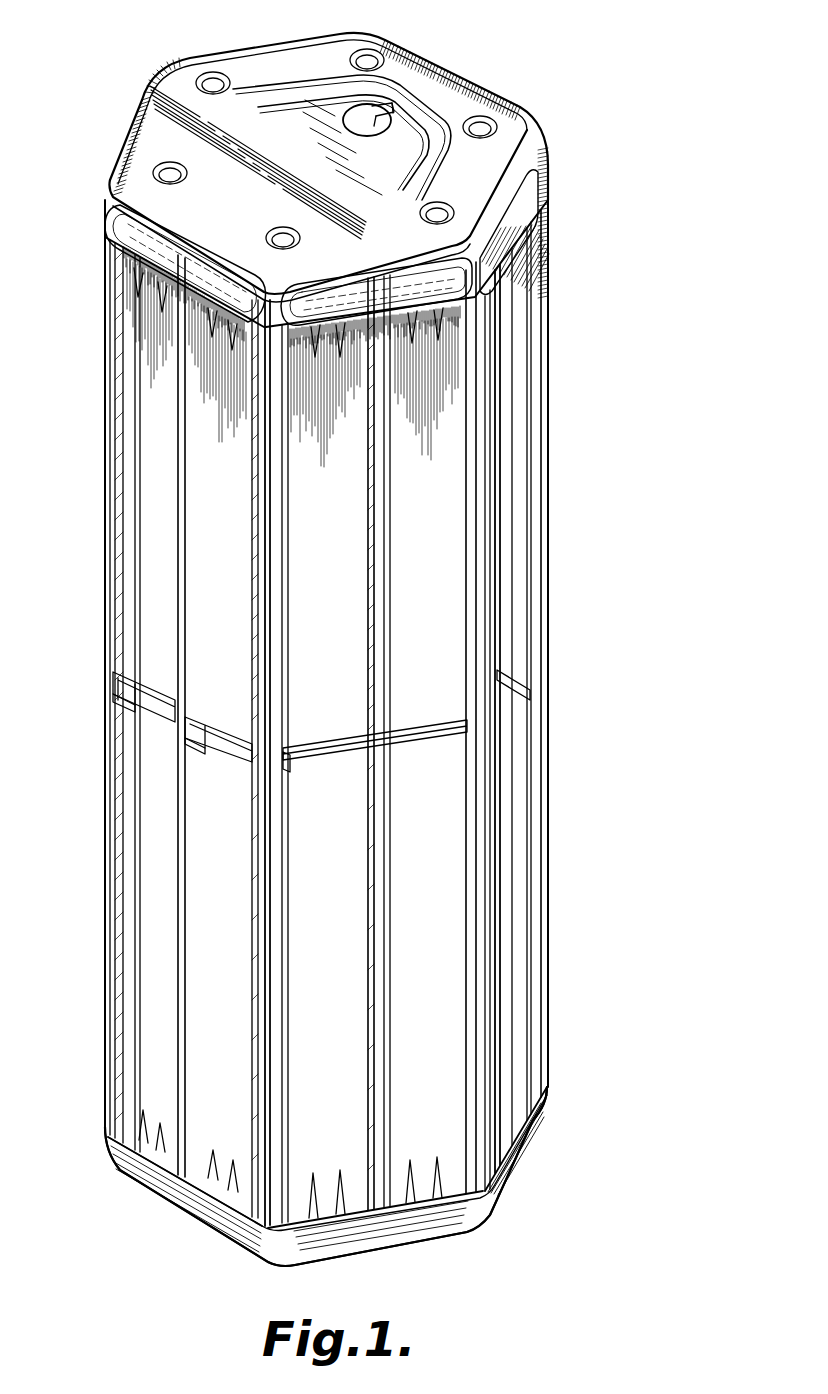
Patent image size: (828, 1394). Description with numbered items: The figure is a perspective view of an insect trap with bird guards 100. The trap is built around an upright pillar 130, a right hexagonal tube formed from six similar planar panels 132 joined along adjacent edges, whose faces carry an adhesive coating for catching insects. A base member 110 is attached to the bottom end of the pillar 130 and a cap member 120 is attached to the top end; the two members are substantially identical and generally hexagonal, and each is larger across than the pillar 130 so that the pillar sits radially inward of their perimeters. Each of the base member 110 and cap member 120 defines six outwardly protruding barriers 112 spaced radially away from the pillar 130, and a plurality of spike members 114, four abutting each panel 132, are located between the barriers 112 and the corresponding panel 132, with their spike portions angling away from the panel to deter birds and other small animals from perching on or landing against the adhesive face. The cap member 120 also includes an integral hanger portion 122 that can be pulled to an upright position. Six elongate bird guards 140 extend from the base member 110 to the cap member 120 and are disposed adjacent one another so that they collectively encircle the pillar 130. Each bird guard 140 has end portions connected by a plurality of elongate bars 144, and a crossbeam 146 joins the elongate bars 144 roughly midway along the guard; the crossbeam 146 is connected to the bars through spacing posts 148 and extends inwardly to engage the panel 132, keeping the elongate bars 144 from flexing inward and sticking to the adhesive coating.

The insect trap with bird guards 100 is at (668, 141).
The base member 110 is at (460, 1237).
The barriers 112 is at (115, 225).
The spike members 114 is at (152, 284).
The cap member 120 is at (517, 104).
The hanger portion 122 is at (385, 93).
The pillar 130 is at (348, 568).
The planar panels 132 is at (233, 503).
The elongate bird guards 140 is at (120, 295).
The elongate bars 144 is at (118, 341).
The crossbeam 146 is at (163, 701).
The spacing posts 148 is at (123, 683).